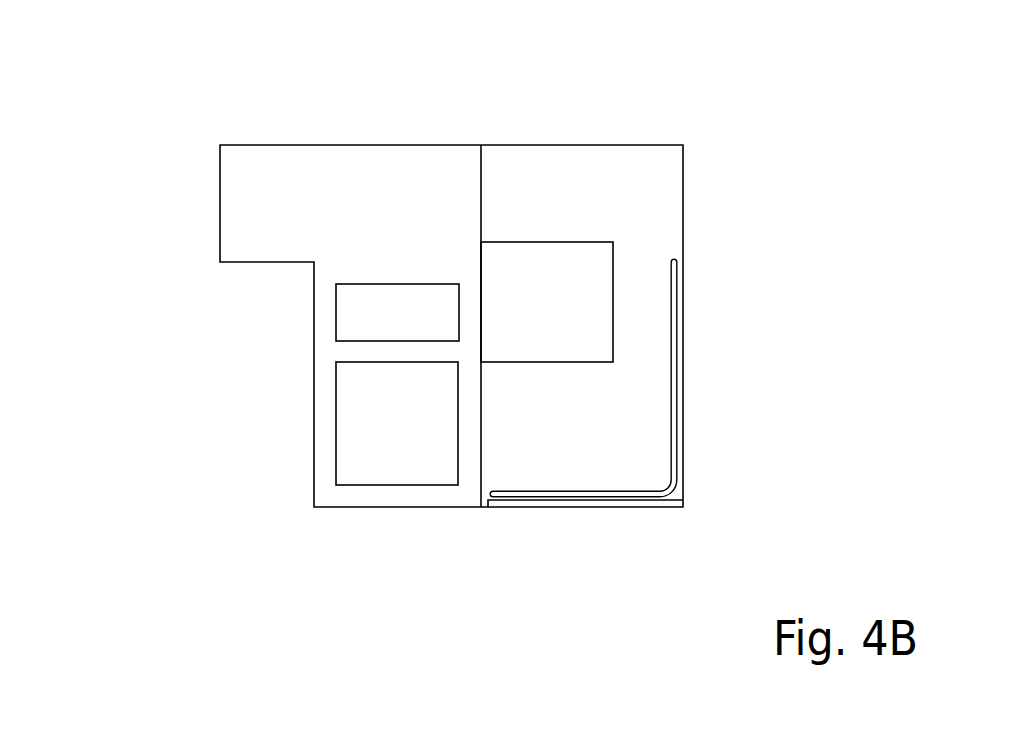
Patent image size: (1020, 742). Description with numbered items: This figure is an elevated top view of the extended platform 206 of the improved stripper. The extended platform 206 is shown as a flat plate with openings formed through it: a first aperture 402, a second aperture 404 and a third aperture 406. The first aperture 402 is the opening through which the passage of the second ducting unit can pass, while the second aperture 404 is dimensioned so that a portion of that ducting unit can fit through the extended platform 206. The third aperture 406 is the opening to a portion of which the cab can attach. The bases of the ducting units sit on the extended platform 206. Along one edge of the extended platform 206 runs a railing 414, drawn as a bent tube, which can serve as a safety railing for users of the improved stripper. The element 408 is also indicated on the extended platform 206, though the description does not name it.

The extended platform 206 is at (290, 95).
The first aperture 402 is at (560, 285).
The second aperture 404 is at (378, 314).
The third aperture 406 is at (368, 456).
The bottom strip / wall 408 is at (600, 507).
The railing 414 is at (675, 399).